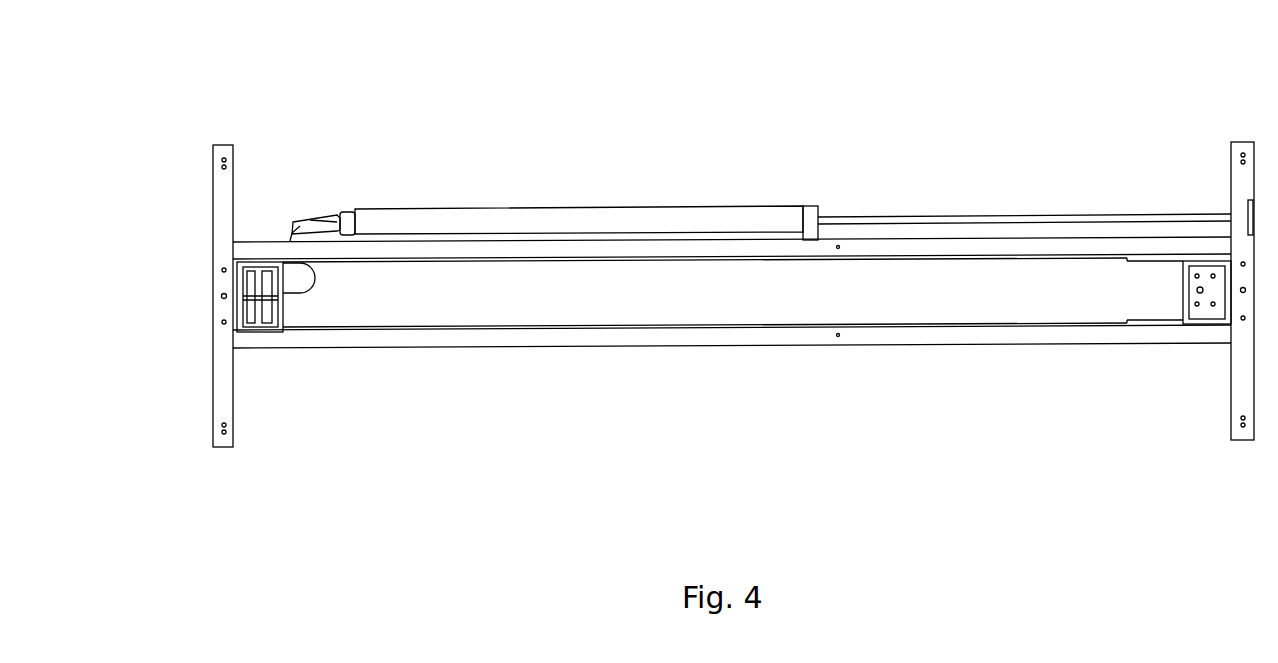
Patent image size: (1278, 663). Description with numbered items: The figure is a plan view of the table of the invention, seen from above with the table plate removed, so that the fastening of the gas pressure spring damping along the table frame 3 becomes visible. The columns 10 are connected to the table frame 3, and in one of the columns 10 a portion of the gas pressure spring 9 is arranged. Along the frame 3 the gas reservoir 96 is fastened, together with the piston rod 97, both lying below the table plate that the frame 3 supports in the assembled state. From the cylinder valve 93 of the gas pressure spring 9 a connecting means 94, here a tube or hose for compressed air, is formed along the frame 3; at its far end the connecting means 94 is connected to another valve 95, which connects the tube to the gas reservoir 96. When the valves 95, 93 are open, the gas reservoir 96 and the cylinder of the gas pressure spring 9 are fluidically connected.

The table frame 3 is at (935, 345).
The gas pressure spring 9 is at (267, 333).
The column 10 is at (208, 290).
The cylinder valve 93 is at (288, 294).
The connecting means 94 is at (292, 238).
The valve 95 is at (328, 220).
The gas reservoir 96 is at (420, 208).
The piston rod 97 is at (870, 215).